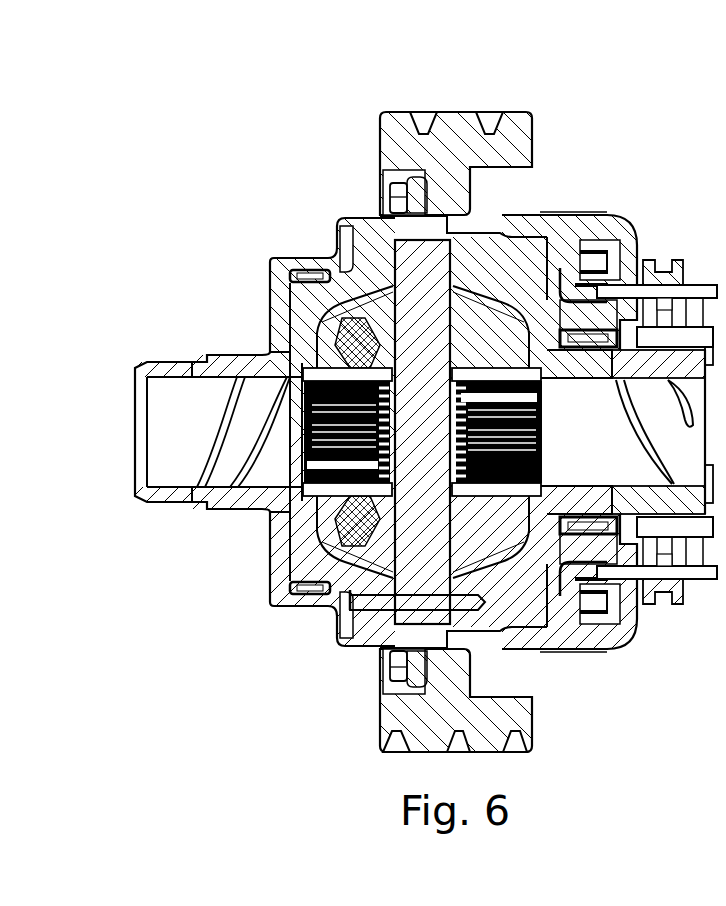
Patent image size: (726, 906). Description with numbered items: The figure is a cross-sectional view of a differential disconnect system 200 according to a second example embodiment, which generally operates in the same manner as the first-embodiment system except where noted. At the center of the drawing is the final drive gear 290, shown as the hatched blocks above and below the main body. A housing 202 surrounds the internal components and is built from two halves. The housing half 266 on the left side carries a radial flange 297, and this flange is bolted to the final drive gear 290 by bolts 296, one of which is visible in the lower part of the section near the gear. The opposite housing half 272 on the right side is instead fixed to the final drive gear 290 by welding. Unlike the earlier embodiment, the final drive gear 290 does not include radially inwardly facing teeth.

The differential disconnect system 200 is at (356, 114).
The housing 202 is at (578, 192).
The housing half 266 is at (322, 222).
The housing half 272 is at (625, 232).
The final drive gear 290 is at (486, 110).
The bolts 296 is at (400, 664).
The radial flange 297 is at (413, 176).